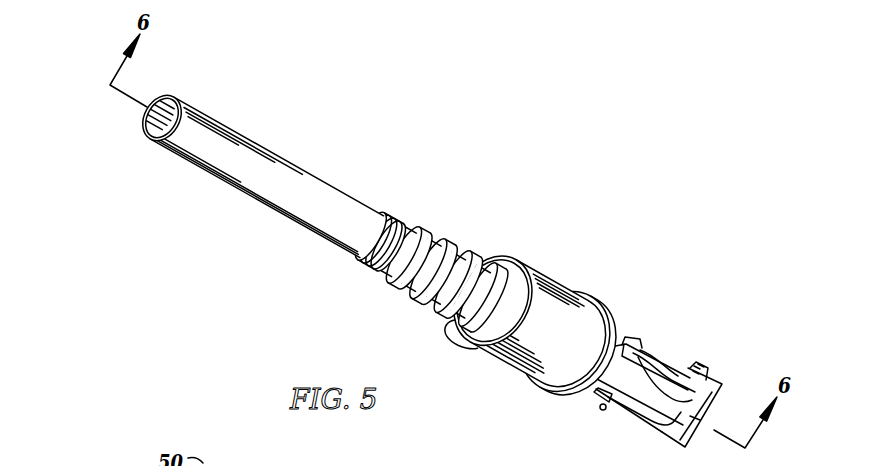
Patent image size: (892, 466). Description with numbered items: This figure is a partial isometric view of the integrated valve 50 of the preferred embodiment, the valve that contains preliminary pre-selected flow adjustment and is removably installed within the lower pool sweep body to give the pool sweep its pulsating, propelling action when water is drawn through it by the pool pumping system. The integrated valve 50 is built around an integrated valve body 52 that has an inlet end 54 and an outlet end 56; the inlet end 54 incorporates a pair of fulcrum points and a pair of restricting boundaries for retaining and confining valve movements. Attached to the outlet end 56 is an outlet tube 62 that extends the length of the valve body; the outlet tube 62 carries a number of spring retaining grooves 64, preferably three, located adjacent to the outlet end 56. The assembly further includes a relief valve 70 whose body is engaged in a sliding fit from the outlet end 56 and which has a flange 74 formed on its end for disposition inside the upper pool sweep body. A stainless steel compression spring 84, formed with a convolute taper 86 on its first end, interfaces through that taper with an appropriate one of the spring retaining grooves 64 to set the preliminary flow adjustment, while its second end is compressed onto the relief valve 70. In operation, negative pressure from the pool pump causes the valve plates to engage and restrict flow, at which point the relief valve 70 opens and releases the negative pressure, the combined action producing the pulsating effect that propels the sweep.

The integrated valve 50 is at (334, 150).
The integrated valve body 52 is at (609, 314).
The inlet end 54 is at (725, 402).
The outlet end 56 is at (145, 124).
The outlet tube 62 is at (257, 198).
The spring retaining grooves 64 is at (390, 218).
The relief valve 70 is at (510, 368).
The flange 74 is at (550, 397).
The compression spring 84 is at (463, 253).
The convolute taper 86 is at (368, 262).